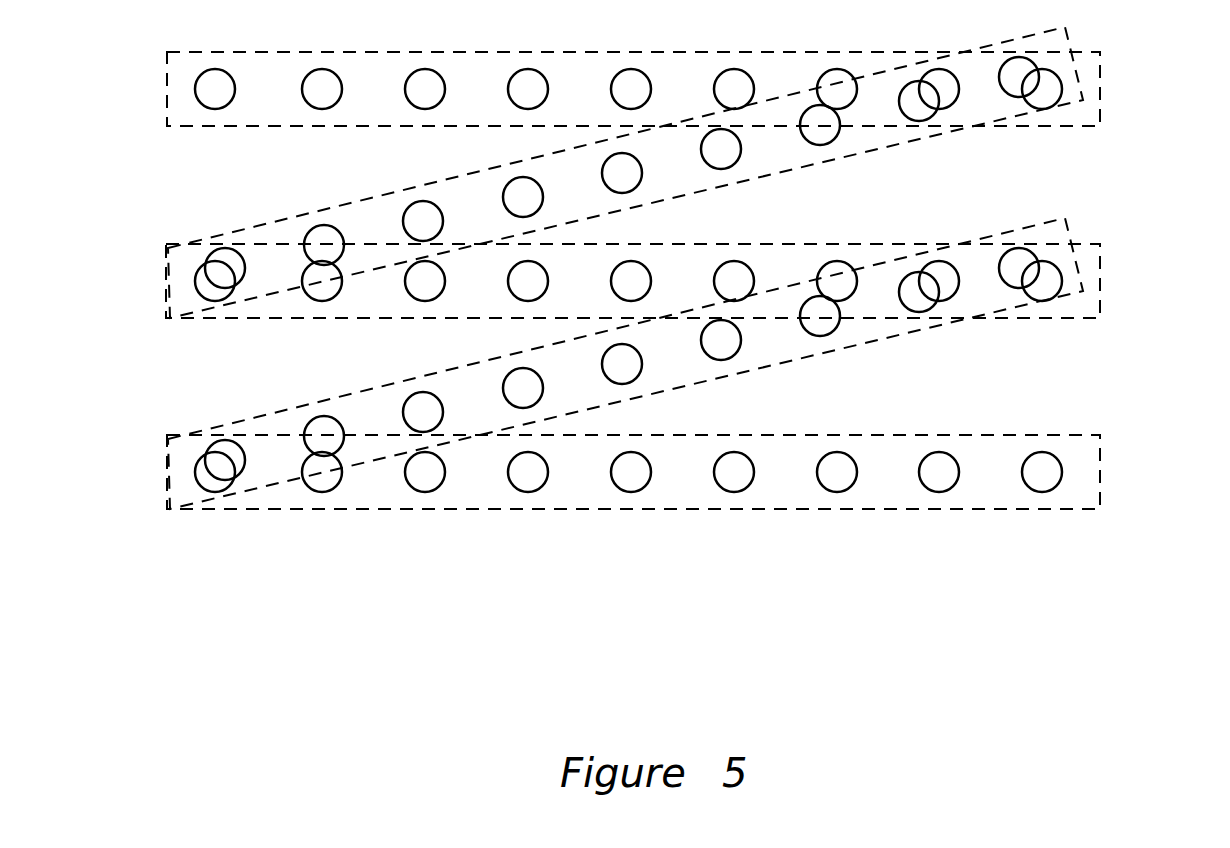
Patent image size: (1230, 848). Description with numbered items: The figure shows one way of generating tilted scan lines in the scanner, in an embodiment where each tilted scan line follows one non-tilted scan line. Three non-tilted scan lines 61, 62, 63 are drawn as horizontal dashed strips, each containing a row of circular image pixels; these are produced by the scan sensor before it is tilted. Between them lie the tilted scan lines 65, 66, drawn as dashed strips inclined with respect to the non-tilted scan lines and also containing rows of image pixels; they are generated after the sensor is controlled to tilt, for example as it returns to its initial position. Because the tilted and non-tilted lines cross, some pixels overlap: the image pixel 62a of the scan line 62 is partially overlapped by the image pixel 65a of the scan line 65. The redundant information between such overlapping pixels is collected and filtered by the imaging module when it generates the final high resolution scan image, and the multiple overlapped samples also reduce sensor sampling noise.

The scan line 61 is at (1100, 89).
The scan line 62 is at (1100, 281).
The scan line 63 is at (1100, 437).
The scan line 65 is at (326, 208).
The scan line 66 is at (343, 396).
The image pixel 65a is at (211, 249).
The image pixel 62a is at (200, 291).